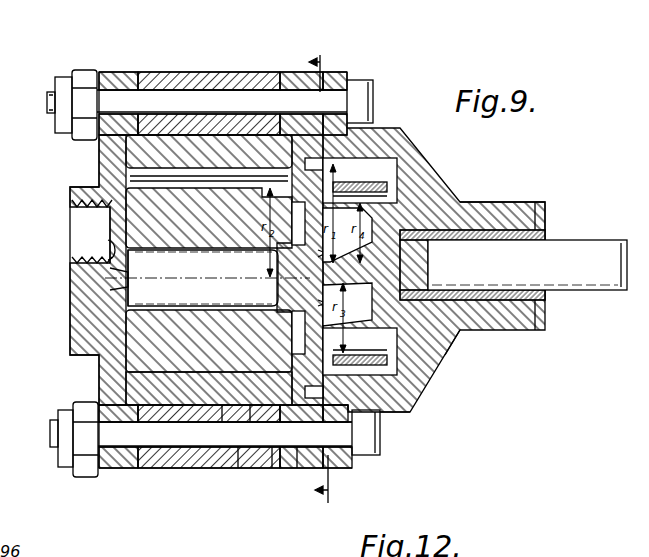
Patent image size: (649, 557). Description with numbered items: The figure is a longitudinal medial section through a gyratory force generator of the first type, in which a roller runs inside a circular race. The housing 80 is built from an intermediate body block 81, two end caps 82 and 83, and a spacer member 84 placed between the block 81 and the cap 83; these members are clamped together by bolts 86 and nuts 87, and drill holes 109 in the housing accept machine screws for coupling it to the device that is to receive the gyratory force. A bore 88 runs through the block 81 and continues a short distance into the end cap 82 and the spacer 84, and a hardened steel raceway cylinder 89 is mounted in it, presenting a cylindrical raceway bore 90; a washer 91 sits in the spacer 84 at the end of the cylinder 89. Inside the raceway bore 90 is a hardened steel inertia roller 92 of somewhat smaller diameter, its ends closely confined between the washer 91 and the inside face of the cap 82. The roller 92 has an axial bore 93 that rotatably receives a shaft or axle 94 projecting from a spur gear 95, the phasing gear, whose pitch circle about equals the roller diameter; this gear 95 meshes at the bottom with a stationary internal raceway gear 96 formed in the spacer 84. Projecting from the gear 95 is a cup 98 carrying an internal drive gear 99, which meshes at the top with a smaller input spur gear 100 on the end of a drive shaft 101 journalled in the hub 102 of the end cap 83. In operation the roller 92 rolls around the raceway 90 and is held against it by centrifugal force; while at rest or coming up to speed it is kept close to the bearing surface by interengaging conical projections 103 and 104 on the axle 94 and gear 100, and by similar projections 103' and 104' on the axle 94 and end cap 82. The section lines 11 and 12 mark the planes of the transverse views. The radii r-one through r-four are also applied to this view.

The housing 80 is at (113, 471).
The intermediate body member or block 81 is at (172, 468).
The end cap 82 is at (100, 383).
The end cap 83 is at (414, 411).
The spacer member 84 is at (297, 470).
The bolts 86 is at (363, 83).
The nuts 87 is at (60, 78).
The bore 88 is at (240, 368).
The raceway cylinder 89 is at (238, 400).
The raceway bore 90 is at (222, 368).
The washer 91 is at (275, 368).
The inertia roller 92 is at (200, 368).
The axial bore 93 is at (214, 311).
The shaft or axle 94 is at (128, 303).
The spur gear 95 is at (258, 204).
The internal gear 96 is at (298, 184).
The cup 98 is at (414, 388).
The internal drive gear 99 is at (430, 370).
The input spur gear 100 is at (437, 341).
The drive shaft 101 is at (518, 290).
The hub 102 is at (466, 203).
The conical axial projection 103 is at (304, 297).
The conical axial projection 104 is at (305, 258).
The conical axial projection 103' is at (66, 285).
The conical axial projection 104' is at (61, 251).
The drill holes 109 is at (28, 113).
The section line 11 is at (329, 279).
The section line 12 is at (341, 170).